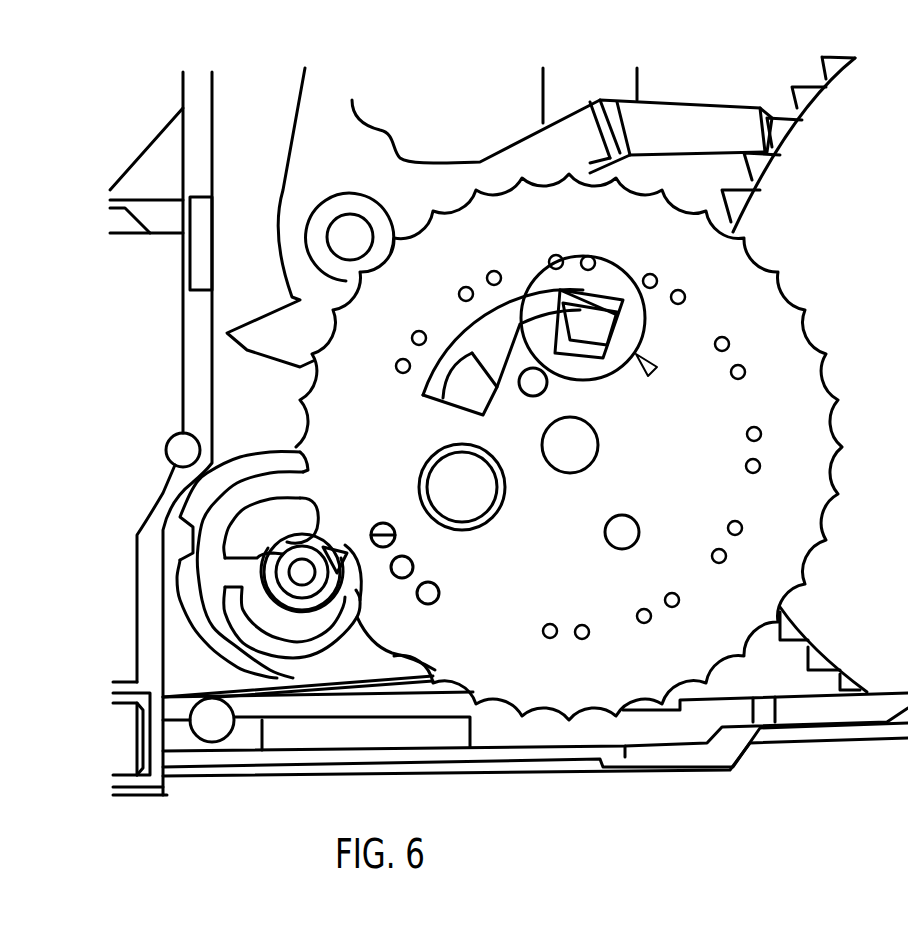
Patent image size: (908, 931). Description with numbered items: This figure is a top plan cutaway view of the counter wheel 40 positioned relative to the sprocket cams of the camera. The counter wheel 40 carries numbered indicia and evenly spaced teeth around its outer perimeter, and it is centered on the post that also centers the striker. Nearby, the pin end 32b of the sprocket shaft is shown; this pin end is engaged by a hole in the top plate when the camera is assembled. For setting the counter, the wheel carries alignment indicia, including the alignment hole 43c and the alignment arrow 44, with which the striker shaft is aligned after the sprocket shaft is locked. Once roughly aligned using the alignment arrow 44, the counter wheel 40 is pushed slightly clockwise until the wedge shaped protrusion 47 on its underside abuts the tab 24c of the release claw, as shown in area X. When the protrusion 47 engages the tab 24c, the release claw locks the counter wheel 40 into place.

The counter wheel 40 is at (502, 700).
The wedge shaped protrusion 47 is at (485, 337).
The tab 24c is at (584, 305).
The alignment hole 43c is at (383, 523).
The pin end 32b is at (298, 568).
The alignment arrow 44 is at (347, 554).
The area X is at (652, 371).